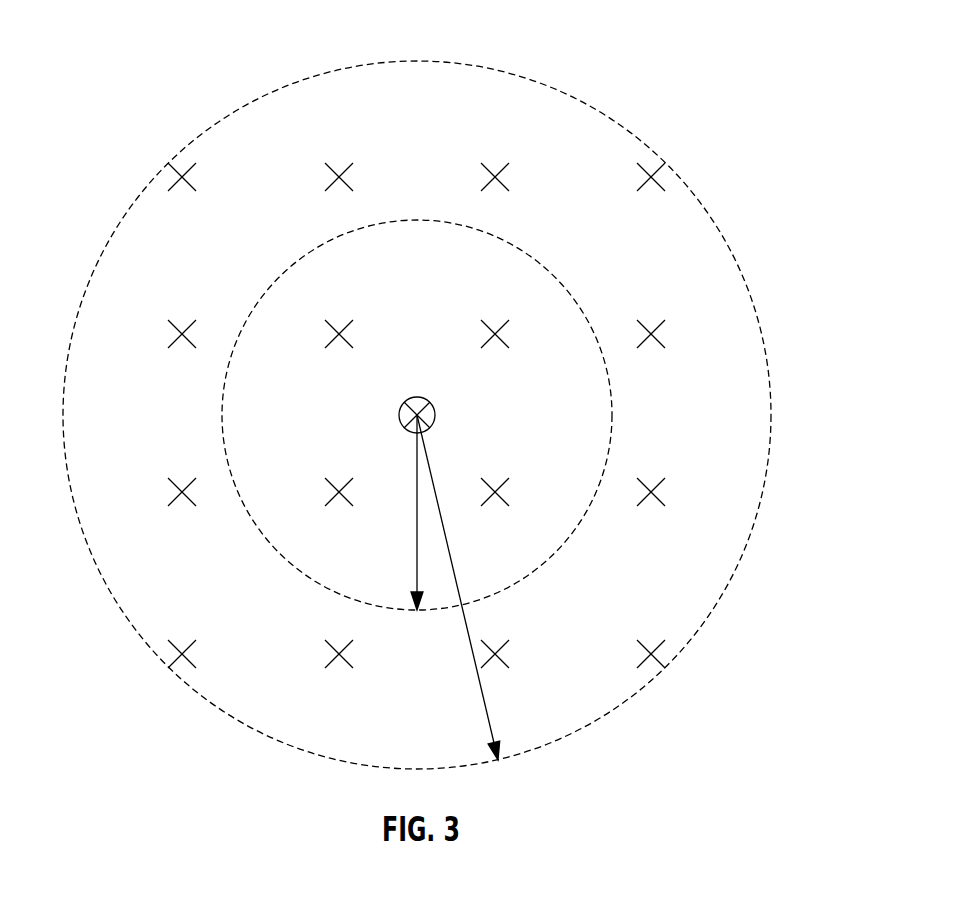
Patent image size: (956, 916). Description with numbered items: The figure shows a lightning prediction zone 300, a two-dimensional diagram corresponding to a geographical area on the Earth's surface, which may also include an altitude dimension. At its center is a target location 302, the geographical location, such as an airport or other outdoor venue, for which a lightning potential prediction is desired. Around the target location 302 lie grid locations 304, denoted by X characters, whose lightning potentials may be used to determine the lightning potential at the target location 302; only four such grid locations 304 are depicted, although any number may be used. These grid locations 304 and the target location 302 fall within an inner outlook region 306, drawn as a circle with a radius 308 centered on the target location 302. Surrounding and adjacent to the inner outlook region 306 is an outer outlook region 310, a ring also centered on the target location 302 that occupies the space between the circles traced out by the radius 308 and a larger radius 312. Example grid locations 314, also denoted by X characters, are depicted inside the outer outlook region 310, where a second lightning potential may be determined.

The lightning prediction zone 300 is at (120, 64).
The target location 302 is at (405, 406).
The grid locations 304 is at (343, 331).
The inner outlook region 306 is at (613, 413).
The radius 308 is at (415, 568).
The outer outlook region 310 is at (772, 413).
The radius 312 is at (480, 695).
The grid locations 314 is at (343, 173).